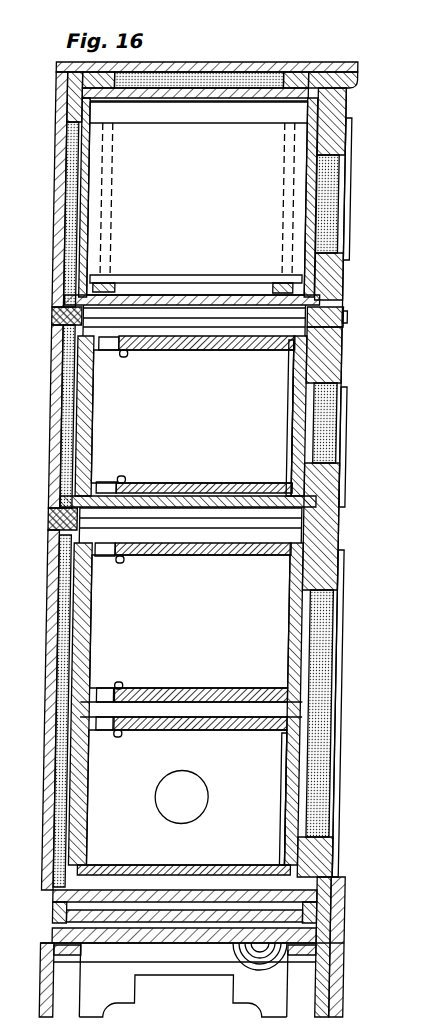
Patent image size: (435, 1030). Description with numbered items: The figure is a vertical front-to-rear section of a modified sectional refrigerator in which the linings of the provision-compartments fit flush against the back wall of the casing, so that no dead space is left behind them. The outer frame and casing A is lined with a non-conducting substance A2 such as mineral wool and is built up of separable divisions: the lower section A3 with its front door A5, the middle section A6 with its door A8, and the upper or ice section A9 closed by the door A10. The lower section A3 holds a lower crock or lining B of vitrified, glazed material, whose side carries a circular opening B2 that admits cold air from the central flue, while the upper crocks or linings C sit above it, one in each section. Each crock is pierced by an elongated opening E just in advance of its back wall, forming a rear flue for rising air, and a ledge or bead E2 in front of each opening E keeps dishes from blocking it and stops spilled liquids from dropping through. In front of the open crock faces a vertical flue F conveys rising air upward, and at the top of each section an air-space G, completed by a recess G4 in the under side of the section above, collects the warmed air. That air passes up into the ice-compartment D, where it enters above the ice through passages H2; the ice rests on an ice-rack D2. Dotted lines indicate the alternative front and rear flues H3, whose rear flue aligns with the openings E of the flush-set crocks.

The outer frame and casing A is at (58, 483).
The non-conducting substance A2 is at (58, 655).
The lower section A3 is at (58, 832).
The door A5 is at (354, 730).
The middle section A6 is at (58, 410).
The door A8 is at (354, 430).
The upper or ice section A9 is at (58, 213).
The door A10 is at (350, 210).
The lower crock or lining B is at (186, 797).
The circular opening B2 is at (212, 813).
The upper crock or lining C is at (191, 519).
The ice-compartment D is at (197, 198).
The ice-rack D2 is at (151, 277).
The opening E is at (115, 355).
The ledge or bead E2 is at (132, 357).
The vertical flue F is at (303, 347).
The air-space G is at (192, 337).
The recess G4 is at (190, 317).
The passage H2 is at (194, 120).
The flue H3 is at (103, 173).